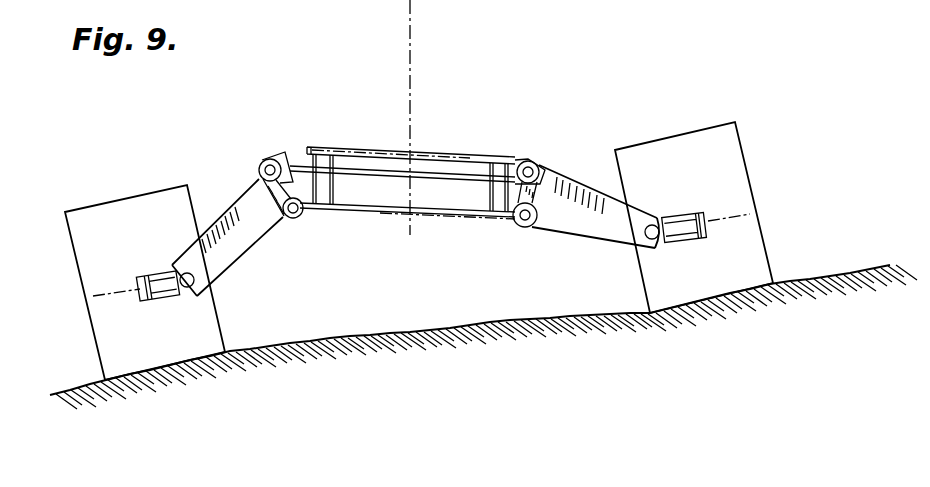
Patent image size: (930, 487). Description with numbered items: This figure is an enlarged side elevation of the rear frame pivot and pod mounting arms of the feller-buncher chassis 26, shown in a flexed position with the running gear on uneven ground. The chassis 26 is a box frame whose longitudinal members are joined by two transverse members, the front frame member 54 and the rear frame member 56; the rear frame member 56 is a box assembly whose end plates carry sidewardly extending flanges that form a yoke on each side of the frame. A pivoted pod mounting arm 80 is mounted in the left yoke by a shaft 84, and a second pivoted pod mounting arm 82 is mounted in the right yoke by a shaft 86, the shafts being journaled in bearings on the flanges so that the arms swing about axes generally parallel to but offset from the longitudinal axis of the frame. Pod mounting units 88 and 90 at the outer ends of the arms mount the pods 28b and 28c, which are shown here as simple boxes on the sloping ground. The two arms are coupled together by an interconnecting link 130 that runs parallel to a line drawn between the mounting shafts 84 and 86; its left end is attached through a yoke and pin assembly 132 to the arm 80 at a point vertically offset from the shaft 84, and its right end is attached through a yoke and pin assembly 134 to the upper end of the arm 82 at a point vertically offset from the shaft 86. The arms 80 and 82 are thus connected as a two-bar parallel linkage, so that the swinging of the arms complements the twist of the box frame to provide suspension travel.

The chassis 26 is at (402, 165).
The pod 28b is at (100, 204).
The pod 28c is at (670, 137).
The front frame member 54 is at (345, 147).
The rear frame member 56 is at (478, 156).
The pivoted pod mounting arm 80 is at (228, 210).
The pivoted pod mounting arm 82 is at (580, 183).
The shaft 84 is at (299, 220).
The shaft 86 is at (526, 229).
The pod mounting unit 88 is at (157, 272).
The pod mounting unit 90 is at (683, 214).
The interconnecting link 130 is at (385, 174).
The yoke and pin assembly 132 is at (272, 158).
The yoke and pin assembly 134 is at (532, 160).